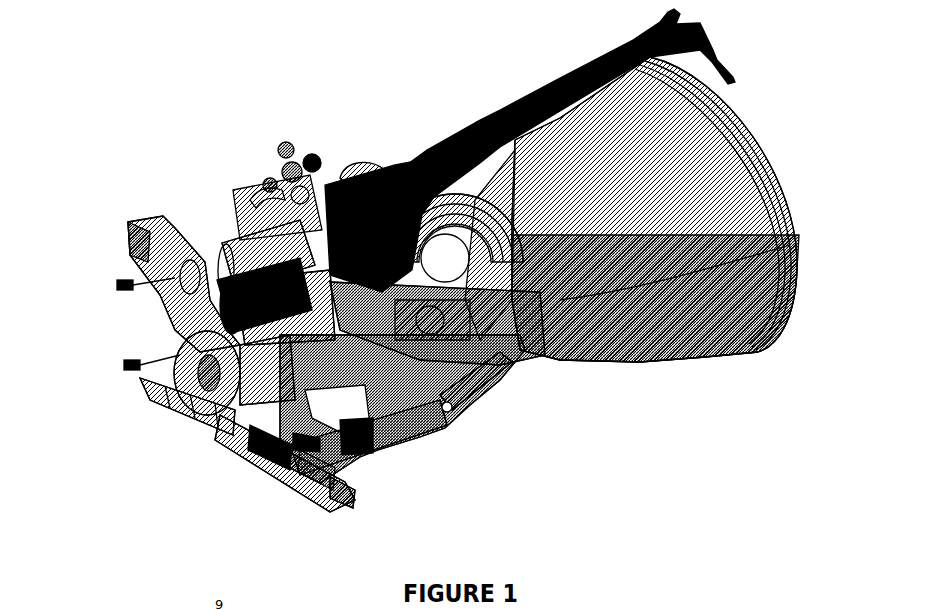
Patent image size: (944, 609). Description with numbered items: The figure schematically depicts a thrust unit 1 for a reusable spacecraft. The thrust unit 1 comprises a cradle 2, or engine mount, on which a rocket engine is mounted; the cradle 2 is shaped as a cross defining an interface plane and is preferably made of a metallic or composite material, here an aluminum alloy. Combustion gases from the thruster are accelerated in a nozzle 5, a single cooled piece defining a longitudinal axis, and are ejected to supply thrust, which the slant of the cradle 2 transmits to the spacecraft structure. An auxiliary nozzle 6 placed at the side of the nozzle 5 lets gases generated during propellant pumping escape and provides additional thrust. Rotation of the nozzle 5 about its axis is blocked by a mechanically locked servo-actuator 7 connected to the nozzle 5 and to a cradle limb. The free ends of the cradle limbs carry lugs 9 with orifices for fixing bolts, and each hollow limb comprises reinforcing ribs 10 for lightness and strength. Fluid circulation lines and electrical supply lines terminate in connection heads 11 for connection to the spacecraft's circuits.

The thrust unit 1 is at (493, 246).
The cradle 2 is at (190, 440).
The nozzle 5 is at (640, 364).
The auxiliary nozzle 6 is at (461, 127).
The servo-actuator 7 is at (476, 402).
The lug 9 is at (343, 498).
The reinforcing rib 10 is at (290, 466).
The connection head 11 is at (229, 278).